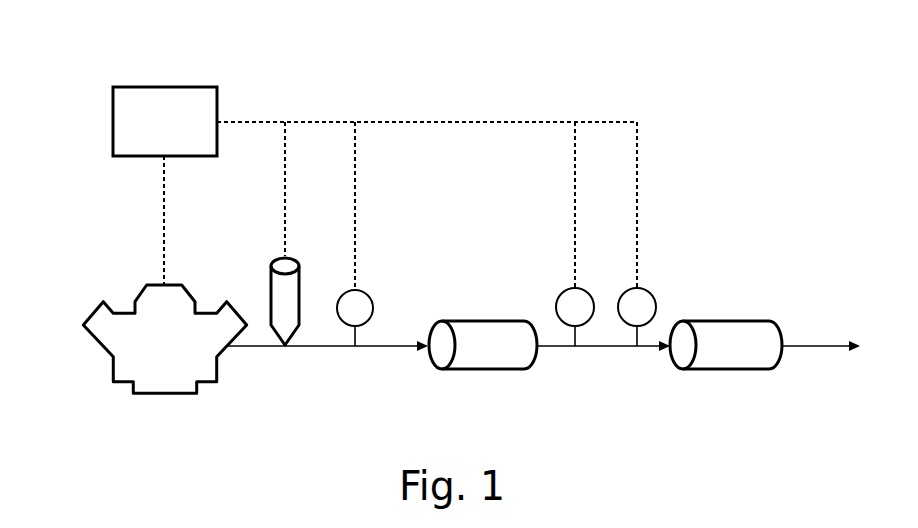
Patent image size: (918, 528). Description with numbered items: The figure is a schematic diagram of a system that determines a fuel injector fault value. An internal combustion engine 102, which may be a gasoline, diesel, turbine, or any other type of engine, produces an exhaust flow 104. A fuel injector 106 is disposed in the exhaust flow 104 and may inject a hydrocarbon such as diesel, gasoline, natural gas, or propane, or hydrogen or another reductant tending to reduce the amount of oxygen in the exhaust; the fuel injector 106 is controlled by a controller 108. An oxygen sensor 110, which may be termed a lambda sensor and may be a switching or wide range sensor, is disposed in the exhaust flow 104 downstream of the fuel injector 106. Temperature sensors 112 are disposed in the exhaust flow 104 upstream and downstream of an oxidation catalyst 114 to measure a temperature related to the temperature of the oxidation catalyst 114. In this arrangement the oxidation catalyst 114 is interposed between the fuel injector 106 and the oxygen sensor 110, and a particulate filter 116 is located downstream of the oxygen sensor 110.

The internal combustion engine 102 is at (145, 350).
The exhaust flow 104 is at (826, 343).
The fuel injector 106 is at (272, 262).
The controller 108 is at (147, 133).
The oxygen sensor 110 is at (561, 290).
The temperature sensor 112 is at (368, 293).
The oxidation catalyst 114 is at (462, 319).
The particulate filter 116 is at (748, 319).